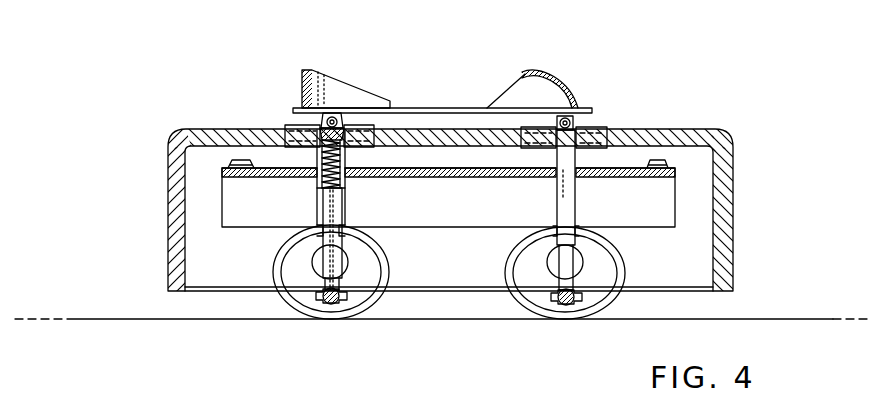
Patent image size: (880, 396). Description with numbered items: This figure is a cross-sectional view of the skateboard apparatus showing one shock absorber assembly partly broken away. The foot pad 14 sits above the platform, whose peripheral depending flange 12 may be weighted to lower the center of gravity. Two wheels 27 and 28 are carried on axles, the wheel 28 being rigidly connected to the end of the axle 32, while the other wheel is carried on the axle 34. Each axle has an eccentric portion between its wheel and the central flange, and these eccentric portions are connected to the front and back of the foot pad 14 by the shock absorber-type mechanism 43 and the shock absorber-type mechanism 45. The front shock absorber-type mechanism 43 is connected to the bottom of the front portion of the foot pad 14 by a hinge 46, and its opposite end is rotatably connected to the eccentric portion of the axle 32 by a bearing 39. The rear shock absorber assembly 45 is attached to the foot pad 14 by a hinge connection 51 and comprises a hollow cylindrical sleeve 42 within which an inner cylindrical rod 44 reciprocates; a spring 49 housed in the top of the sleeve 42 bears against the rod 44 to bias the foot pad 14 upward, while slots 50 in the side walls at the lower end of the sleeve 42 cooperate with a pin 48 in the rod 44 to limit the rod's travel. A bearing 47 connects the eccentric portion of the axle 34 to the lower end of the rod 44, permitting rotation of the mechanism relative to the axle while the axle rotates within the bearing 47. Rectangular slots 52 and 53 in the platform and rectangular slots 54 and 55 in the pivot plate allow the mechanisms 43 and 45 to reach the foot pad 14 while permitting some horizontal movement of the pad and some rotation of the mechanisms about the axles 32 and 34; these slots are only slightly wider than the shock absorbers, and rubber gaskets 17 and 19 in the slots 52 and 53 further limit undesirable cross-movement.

The peripheral depending flange 12 is at (168, 240).
The foot pad 14 is at (442, 108).
The rubber gasket 17 is at (592, 133).
The rubber gasket 19 is at (362, 128).
The wheel 27 is at (274, 256).
The wheel 28 is at (622, 278).
The axle 32 is at (570, 304).
The axle 34 is at (333, 303).
The bearing 39 is at (554, 302).
The hollow cylindrical sleeve 42 is at (345, 161).
The shock absorber-type mechanism 43 is at (580, 208).
The inner cylindrical rod 44 is at (336, 262).
The shock absorber-type mechanism 45 is at (310, 204).
The hinge 46 is at (573, 118).
The bearing 47 is at (314, 289).
The pin 48 is at (343, 229).
The spring 49 is at (338, 117).
The slots 50 is at (346, 209).
The hinge connection 51 is at (322, 121).
The rectangular slot 52 is at (620, 141).
The rectangular slot 53 is at (290, 128).
The rectangular slot 54 is at (582, 174).
The rectangular slot 55 is at (300, 173).